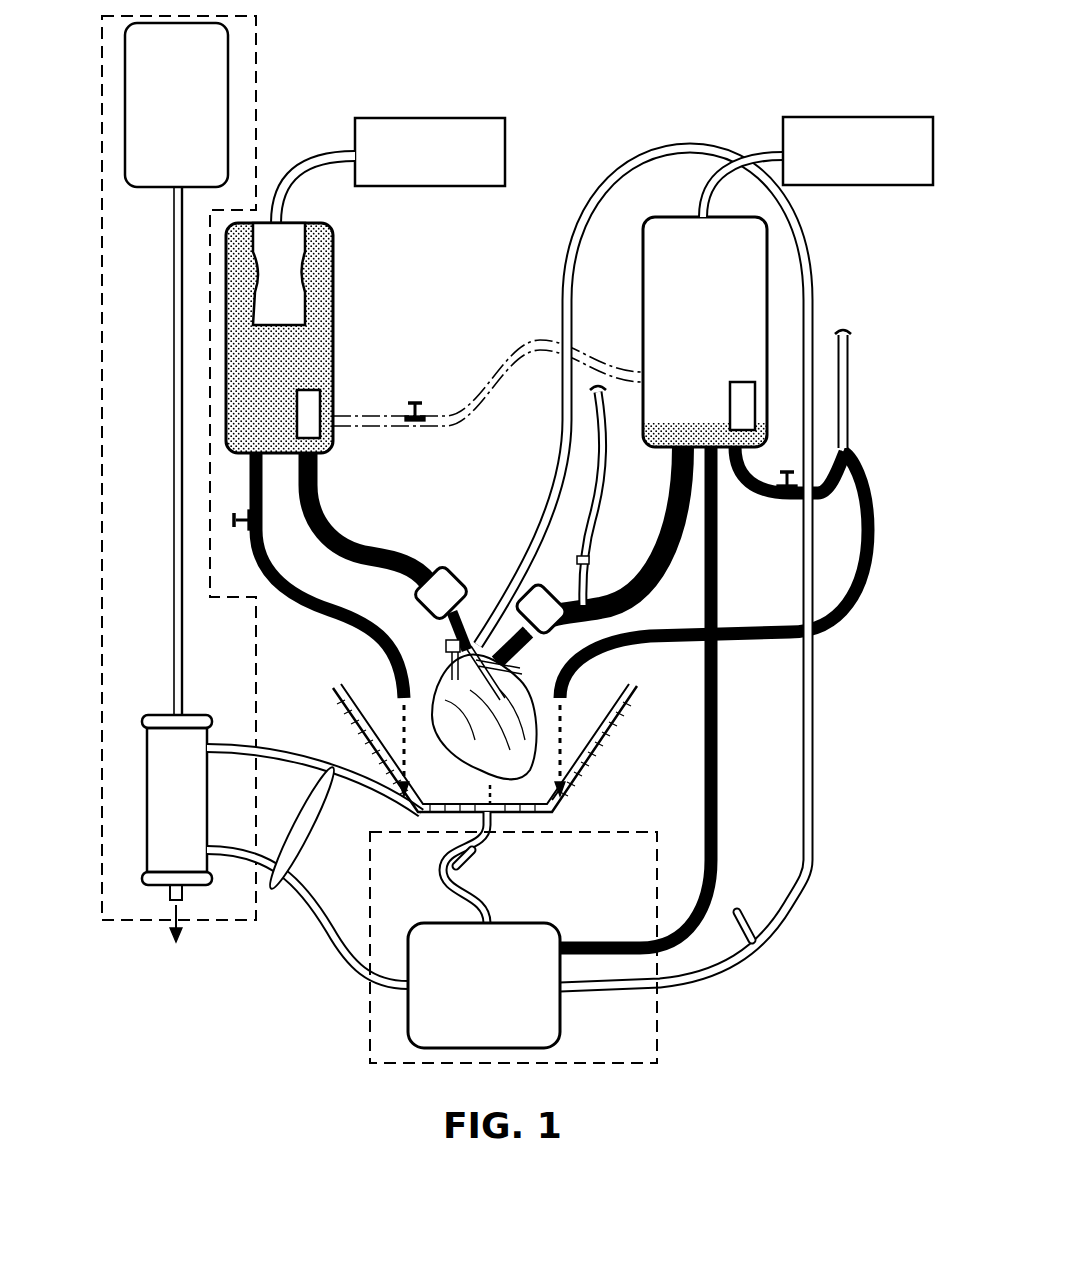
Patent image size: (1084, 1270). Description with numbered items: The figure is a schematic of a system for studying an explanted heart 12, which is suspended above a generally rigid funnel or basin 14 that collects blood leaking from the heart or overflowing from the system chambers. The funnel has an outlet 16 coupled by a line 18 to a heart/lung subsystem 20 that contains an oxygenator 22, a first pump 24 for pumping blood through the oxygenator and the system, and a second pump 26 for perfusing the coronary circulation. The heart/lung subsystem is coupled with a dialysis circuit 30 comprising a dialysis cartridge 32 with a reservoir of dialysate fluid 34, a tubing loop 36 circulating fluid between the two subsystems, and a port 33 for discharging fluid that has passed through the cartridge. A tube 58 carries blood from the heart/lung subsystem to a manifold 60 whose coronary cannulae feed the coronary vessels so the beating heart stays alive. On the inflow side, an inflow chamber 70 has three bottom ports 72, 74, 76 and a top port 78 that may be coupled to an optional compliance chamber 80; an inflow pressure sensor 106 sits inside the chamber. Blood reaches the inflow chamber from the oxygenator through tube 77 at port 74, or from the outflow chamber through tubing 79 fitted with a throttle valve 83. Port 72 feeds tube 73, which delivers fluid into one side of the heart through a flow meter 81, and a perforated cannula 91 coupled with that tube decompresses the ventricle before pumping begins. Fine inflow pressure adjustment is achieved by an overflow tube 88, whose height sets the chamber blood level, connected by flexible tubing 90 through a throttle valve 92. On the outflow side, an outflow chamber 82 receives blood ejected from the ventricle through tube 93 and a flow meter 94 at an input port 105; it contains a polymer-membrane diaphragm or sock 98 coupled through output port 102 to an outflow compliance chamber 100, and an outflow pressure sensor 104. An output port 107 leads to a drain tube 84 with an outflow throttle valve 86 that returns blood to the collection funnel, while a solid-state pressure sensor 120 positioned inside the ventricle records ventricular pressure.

The explanted heart 12 is at (462, 750).
The funnel or basin 14 is at (336, 690).
The outlet 16 is at (486, 808).
The line 18 is at (490, 832).
The heart/lung subsystem 20 is at (657, 1032).
The oxygenator 22 is at (498, 1000).
The first pump 24 is at (474, 864).
The second pump 26 is at (734, 948).
The dialysis circuit 30 is at (256, 100).
The dialysis cartridge 32 is at (152, 784).
The port 33 is at (168, 902).
The reservoir of dialysate fluid 34 is at (190, 76).
The tubing loop 36 is at (304, 818).
The tube 58 is at (808, 838).
The manifold 60 is at (458, 645).
The inflow chamber 70 is at (680, 332).
The bottom port 72 is at (676, 444).
The tube 73 is at (668, 496).
The bottom port 74 is at (710, 428).
The bottom port 76 is at (762, 450).
The tube 77 is at (718, 734).
The top port 78 is at (706, 226).
The tubing 79 is at (502, 388).
The compliance chamber 80 is at (856, 117).
The flow meter 81 is at (540, 582).
The outflow chamber 82 is at (301, 335).
The throttle valve or outflow resistor 83 is at (410, 414).
The tube 84 is at (300, 600).
The outflow throttle valve or resistor 86 is at (244, 532).
The overflow tube 88 is at (850, 408).
The flexible and adjustable tubing 90 is at (872, 514).
The cannula 91 is at (588, 552).
The throttle valve 92 is at (772, 494).
The tube 93 is at (382, 552).
The flow meter 94 is at (418, 610).
The polymer-membrane diaphragm or immersed sock 98 is at (298, 256).
The outflow compliance chamber 100 is at (468, 118).
The output port 102 is at (283, 234).
The outflow pressure sensor 104 is at (320, 416).
The input port 105 is at (318, 462).
The inflow pressure sensor 106 is at (742, 382).
The output port 107 is at (236, 456).
The pressure sensor 120 is at (566, 792).